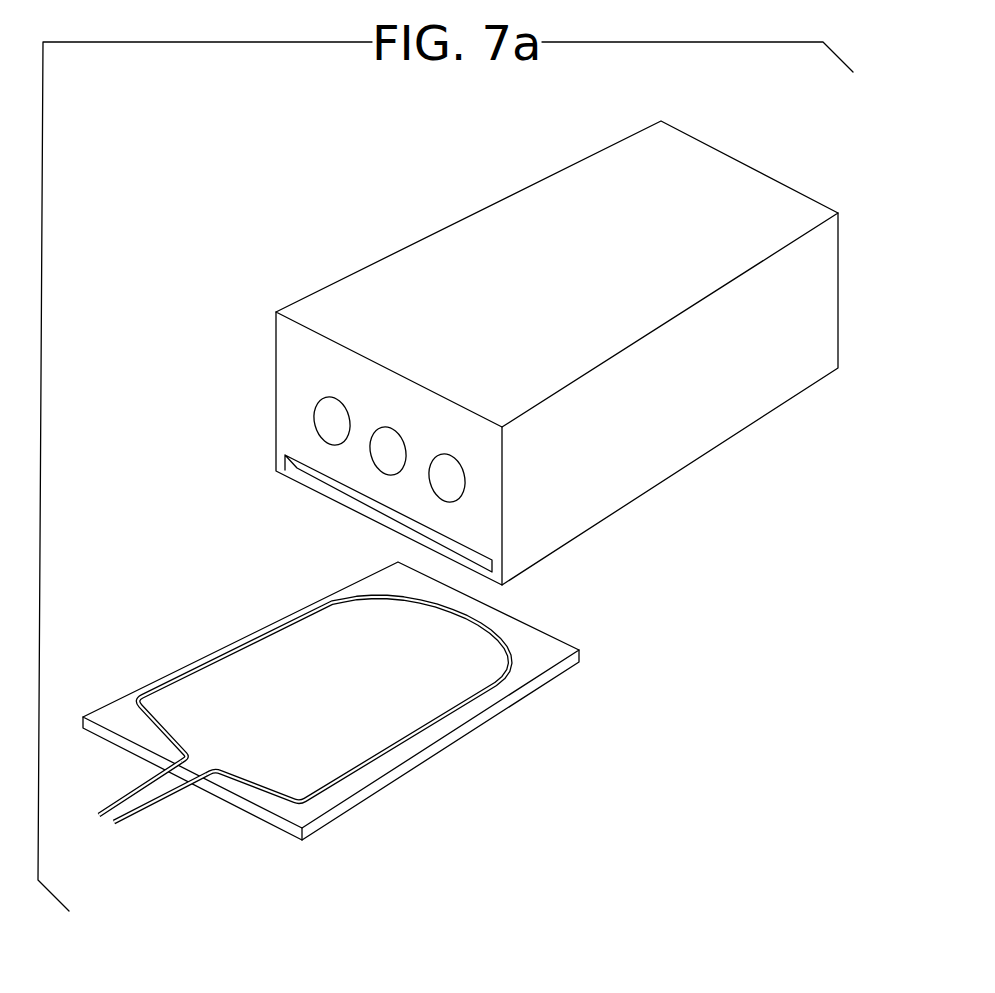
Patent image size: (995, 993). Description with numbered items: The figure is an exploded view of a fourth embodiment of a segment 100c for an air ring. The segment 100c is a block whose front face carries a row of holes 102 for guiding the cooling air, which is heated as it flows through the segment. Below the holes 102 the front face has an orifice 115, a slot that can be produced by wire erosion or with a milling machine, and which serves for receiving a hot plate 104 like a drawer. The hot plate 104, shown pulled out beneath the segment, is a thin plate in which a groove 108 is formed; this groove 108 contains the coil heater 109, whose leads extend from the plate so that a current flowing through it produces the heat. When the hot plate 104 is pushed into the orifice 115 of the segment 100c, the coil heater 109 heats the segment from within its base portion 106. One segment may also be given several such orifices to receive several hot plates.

The segment 100c is at (492, 220).
The holes 102 is at (323, 410).
The hot plate 104 is at (543, 650).
The base portion 106 is at (672, 478).
The groove 108 is at (253, 634).
The coil heater 109 is at (182, 666).
The orifice 115 is at (318, 478).